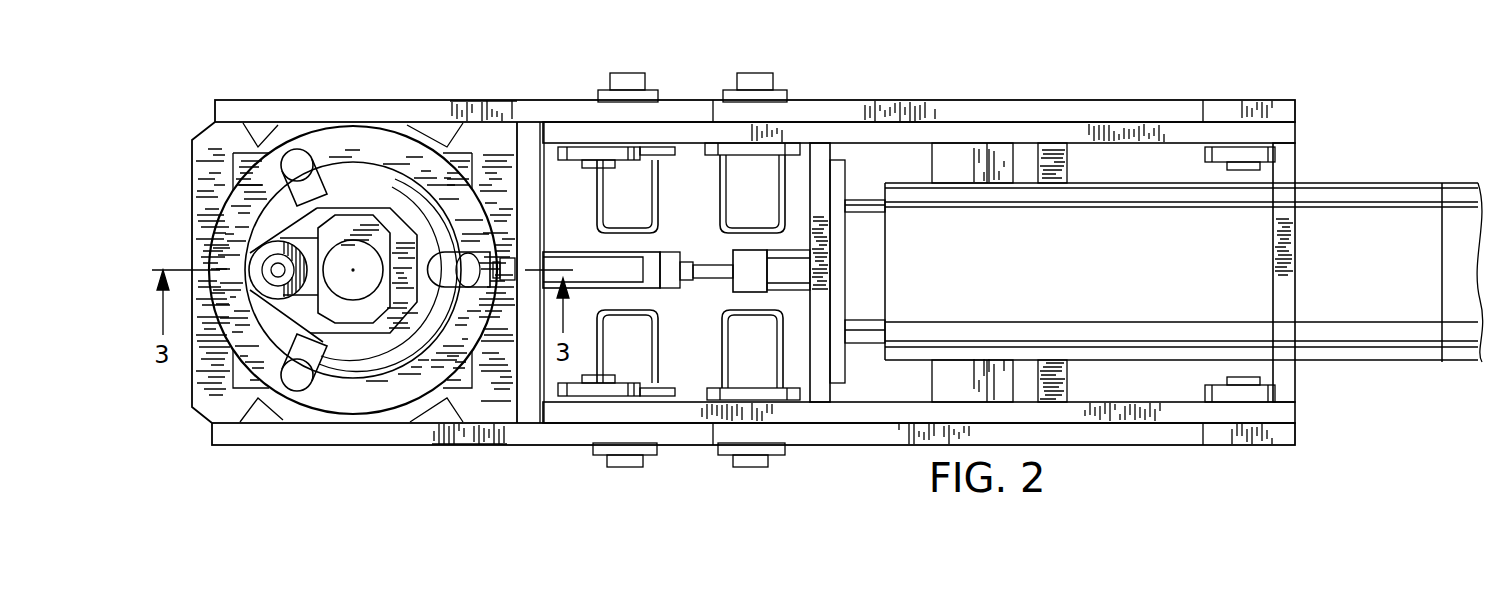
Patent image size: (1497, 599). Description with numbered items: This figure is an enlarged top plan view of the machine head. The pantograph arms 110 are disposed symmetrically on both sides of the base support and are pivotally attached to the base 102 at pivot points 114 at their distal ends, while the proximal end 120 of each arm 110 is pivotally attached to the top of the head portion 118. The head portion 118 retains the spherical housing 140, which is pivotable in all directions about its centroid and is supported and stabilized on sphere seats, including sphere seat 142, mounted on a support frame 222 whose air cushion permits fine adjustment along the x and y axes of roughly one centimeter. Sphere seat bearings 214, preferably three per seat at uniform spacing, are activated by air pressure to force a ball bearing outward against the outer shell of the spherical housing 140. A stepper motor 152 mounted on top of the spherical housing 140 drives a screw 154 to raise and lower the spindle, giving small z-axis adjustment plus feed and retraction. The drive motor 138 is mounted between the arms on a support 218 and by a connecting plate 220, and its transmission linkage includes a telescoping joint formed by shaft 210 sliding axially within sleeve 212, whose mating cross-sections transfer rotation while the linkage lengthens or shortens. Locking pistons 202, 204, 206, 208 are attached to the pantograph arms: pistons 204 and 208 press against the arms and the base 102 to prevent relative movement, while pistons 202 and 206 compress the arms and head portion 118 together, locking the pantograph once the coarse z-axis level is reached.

The base 102 is at (1293, 112).
The arm 110 is at (1038, 107).
The pivot point 114 is at (1252, 167).
The head portion 118 is at (490, 108).
The proximal end 120 is at (588, 165).
The drive motor 138 is at (1398, 200).
The spherical housing 140 is at (277, 322).
The sphere seat 142 is at (368, 140).
The stepper motor 152 is at (363, 222).
The screw 154 is at (275, 268).
The locking piston 202 is at (643, 377).
The locking piston 204 is at (768, 368).
The locking piston 206 is at (642, 177).
The locking piston 208 is at (772, 177).
The shaft 210 is at (773, 270).
The sleeve 212 is at (738, 283).
The sphere seat bearing 214 is at (302, 158).
The support 218 is at (985, 150).
The connecting plate 220 is at (822, 387).
The support frame 222 is at (210, 175).